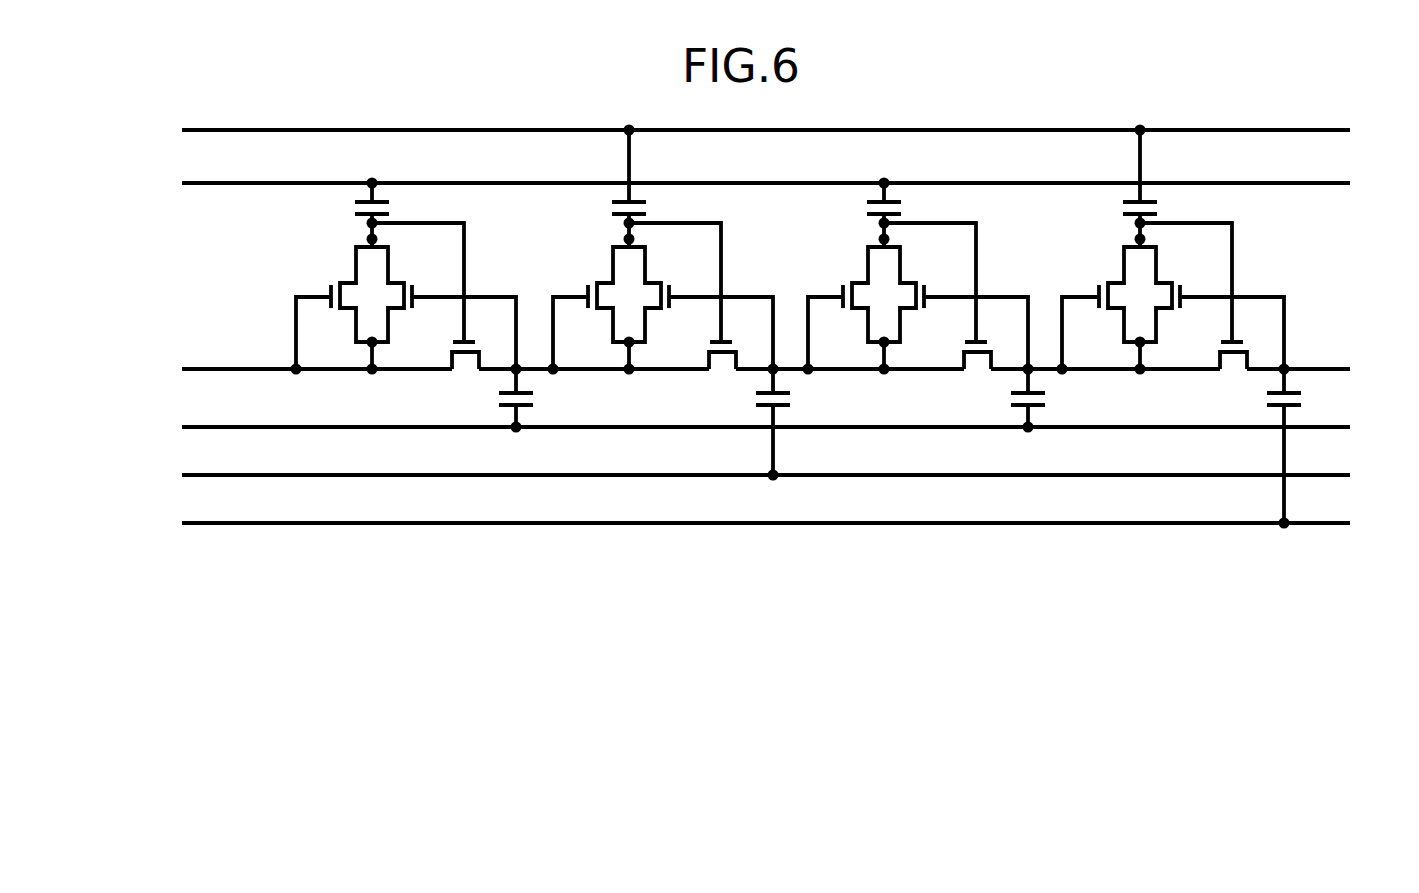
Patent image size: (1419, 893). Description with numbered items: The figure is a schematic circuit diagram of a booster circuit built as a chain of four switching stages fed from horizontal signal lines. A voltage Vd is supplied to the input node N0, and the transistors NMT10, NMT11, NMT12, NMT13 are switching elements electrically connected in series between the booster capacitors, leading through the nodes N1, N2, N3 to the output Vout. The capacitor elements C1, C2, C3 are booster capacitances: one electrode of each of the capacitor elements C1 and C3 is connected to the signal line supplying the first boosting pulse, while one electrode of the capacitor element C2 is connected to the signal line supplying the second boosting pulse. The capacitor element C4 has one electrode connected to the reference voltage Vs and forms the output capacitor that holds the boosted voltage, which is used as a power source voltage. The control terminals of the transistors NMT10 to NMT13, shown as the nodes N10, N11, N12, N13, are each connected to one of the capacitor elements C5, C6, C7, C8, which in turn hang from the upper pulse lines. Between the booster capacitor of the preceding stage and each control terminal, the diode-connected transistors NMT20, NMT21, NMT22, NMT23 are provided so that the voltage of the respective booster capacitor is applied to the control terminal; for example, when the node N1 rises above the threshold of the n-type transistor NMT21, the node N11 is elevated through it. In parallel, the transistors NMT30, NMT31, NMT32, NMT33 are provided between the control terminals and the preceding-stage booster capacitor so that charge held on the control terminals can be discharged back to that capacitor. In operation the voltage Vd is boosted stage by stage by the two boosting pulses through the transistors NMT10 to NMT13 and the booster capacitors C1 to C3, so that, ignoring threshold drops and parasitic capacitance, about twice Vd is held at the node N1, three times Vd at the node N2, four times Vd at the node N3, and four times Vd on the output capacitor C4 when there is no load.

The voltage Vd is at (748, 369).
The reference voltage Vs is at (748, 523).
The output voltage Vout is at (1335, 353).
The booster capacitor C1 is at (533, 401).
The booster capacitor C2 is at (791, 425).
The booster capacitor C3 is at (1054, 401).
The output capacitor C4 is at (1302, 449).
The capacitor element C5 is at (372, 199).
The capacitor element C6 is at (618, 186).
The capacitor element C7 is at (868, 200).
The capacitor element C8 is at (1127, 186).
The node N0 is at (361, 371).
The node N1 is at (623, 373).
The node N2 is at (883, 373).
The node N3 is at (1137, 373).
The node N10 is at (431, 267).
The node N11 is at (688, 268).
The node N12 is at (945, 270).
The node N13 is at (1198, 263).
The transistor NMT10 is at (439, 372).
The transistor NMT11 is at (697, 373).
The transistor NMT12 is at (951, 374).
The transistor NMT13 is at (1206, 372).
The transistor NMT20 is at (340, 311).
The transistor NMT21 is at (599, 311).
The transistor NMT22 is at (854, 311).
The transistor NMT23 is at (1107, 311).
The transistor NMT30 is at (431, 311).
The transistor NMT31 is at (688, 311).
The transistor NMT32 is at (943, 311).
The transistor NMT33 is at (1199, 309).